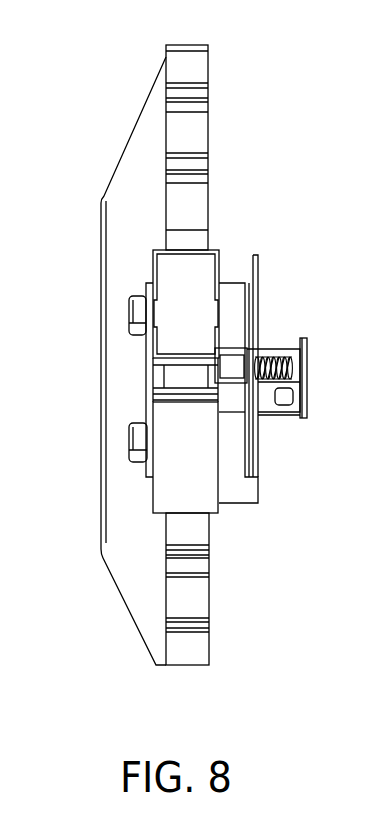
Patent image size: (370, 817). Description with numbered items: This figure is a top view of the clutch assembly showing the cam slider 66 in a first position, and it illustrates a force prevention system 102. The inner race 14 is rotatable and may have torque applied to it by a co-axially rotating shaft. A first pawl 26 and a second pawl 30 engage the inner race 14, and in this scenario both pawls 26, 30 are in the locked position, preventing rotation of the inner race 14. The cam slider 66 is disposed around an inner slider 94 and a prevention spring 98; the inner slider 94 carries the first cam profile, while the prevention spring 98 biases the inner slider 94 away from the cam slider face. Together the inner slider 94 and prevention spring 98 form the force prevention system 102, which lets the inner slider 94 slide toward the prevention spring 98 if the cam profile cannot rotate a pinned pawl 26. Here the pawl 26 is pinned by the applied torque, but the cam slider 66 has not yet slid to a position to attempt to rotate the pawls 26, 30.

The force prevention system 102 is at (84, 114).
The inner race 14 is at (193, 70).
The first pawl 26 is at (195, 277).
The second pawl 30 is at (198, 487).
The inner slider 94 is at (237, 370).
The prevention spring 98 is at (284, 360).
The cam slider 66 is at (283, 401).